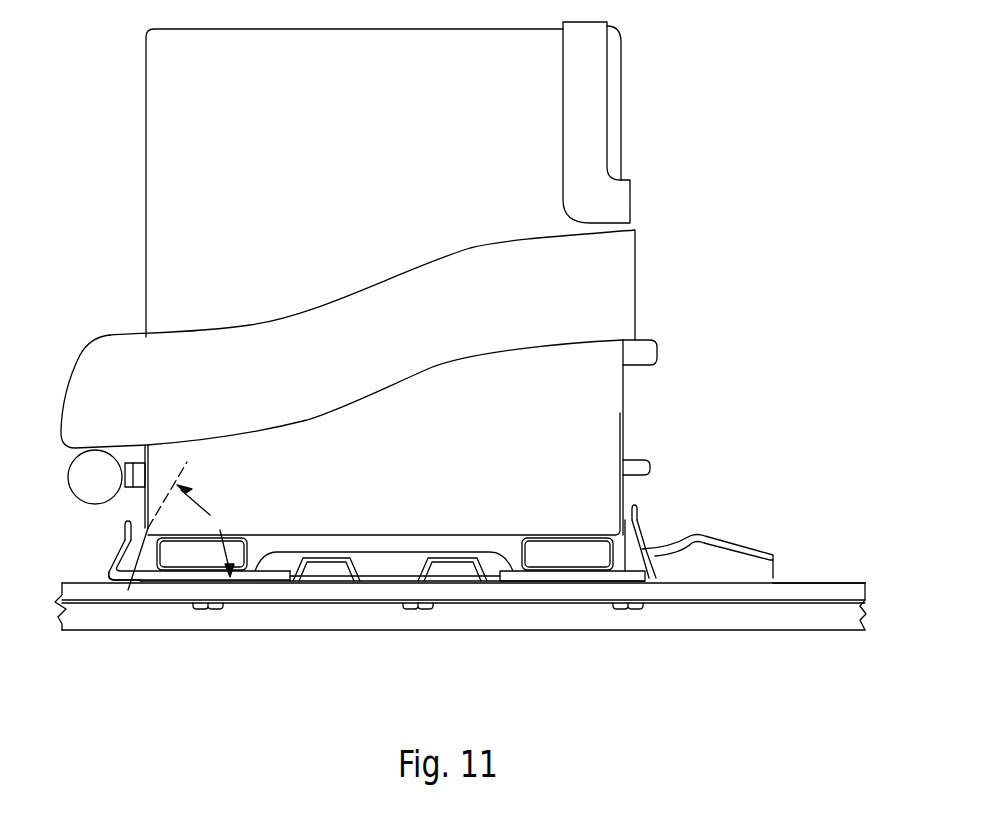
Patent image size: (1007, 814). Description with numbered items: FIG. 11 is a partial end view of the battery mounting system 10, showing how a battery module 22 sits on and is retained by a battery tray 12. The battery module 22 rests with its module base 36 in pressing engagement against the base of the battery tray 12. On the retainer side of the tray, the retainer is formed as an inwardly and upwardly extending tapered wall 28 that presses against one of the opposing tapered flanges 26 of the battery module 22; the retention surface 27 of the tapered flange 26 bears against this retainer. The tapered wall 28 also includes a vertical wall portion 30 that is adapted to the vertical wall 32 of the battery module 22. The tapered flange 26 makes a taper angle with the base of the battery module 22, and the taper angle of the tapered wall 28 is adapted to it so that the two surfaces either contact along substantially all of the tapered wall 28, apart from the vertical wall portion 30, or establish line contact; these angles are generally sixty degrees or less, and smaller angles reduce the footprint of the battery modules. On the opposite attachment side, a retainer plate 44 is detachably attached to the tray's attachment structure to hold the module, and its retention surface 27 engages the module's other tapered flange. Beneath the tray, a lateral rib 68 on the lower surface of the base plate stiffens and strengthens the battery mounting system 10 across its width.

The battery mounting system 10 is at (802, 543).
The battery tray 12 is at (780, 576).
The battery module 22 is at (627, 412).
The tapered flange 26 is at (135, 565).
The retention surface 27 is at (121, 555).
The tapered wall 28 is at (110, 568).
The vertical wall portion 30 is at (124, 545).
The vertical wall 32 is at (150, 523).
The module base 36 is at (255, 558).
The retainer plate 44 is at (722, 535).
The lateral rib 68 is at (537, 582).